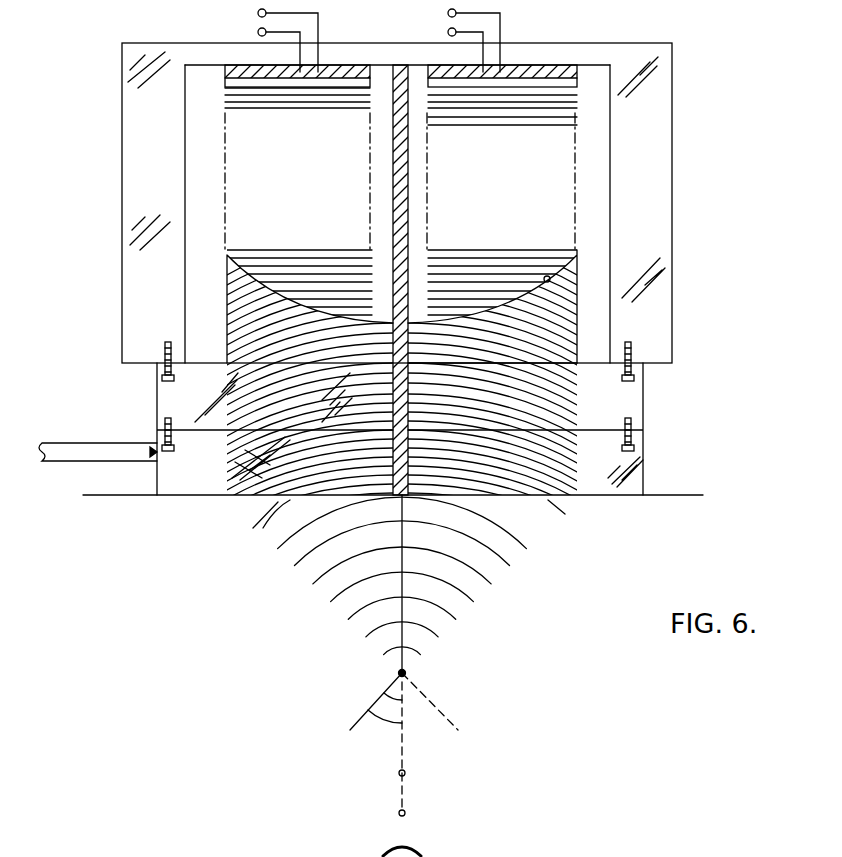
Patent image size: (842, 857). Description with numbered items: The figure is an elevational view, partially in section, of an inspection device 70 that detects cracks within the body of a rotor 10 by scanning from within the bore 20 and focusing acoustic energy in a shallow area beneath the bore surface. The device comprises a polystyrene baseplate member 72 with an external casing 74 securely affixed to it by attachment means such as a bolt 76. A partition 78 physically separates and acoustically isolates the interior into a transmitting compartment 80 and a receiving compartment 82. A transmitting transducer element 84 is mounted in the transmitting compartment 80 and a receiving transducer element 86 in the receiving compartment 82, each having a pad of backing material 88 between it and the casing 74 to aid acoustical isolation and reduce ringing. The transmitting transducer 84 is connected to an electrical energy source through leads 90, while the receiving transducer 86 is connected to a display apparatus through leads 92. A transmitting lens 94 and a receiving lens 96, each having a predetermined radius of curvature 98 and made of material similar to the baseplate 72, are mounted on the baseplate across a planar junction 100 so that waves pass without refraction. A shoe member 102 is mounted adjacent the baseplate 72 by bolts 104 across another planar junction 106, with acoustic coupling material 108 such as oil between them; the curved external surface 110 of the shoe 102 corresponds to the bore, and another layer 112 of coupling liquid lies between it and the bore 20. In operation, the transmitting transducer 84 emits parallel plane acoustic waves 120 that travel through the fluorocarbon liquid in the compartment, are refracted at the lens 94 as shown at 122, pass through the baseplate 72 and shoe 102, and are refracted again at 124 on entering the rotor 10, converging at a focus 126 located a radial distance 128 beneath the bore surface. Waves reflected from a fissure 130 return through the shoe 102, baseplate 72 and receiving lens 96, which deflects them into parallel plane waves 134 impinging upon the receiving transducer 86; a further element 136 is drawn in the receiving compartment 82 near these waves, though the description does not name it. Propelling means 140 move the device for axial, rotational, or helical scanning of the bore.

The rotor 10 is at (670, 555).
The bore 20 is at (692, 498).
The inspection device 70 is at (729, 105).
The baseplate member 72 is at (643, 388).
The external casing 74 is at (672, 190).
The bolt 76 is at (168, 342).
The partition 78 is at (393, 190).
The transmitting compartment 80 is at (603, 184).
The receiving compartment 82 is at (213, 184).
The transmitting transducer element 84 is at (577, 85).
The receiving transducer element 86 is at (236, 86).
The backing material pad 88 is at (335, 68).
The leads 90 is at (448, 13).
The leads 92 is at (258, 13).
The transmitting lens 94 is at (554, 310).
The receiving lens 96 is at (245, 322).
The radius of curvature 98 is at (240, 258).
The planar junction 100 is at (560, 363).
The shoe member 102 is at (640, 470).
The bolts 104 is at (638, 448).
The planar junction 106 is at (617, 425).
The acoustic coupling material 108 is at (553, 427).
The external surface 110 is at (228, 495).
The acoustic coupling layer 112 is at (253, 520).
The parallel plane acoustic waves 120 is at (520, 125).
The refracted waves 122 is at (545, 276).
The refracted waves 124 is at (543, 497).
The focus 126 is at (403, 683).
The radial distance 128 is at (400, 607).
The fissure 130 is at (380, 732).
The parallel plane waves 134 is at (225, 135).
The left layer boundary 136 is at (303, 108).
The propelling means 140 is at (102, 445).